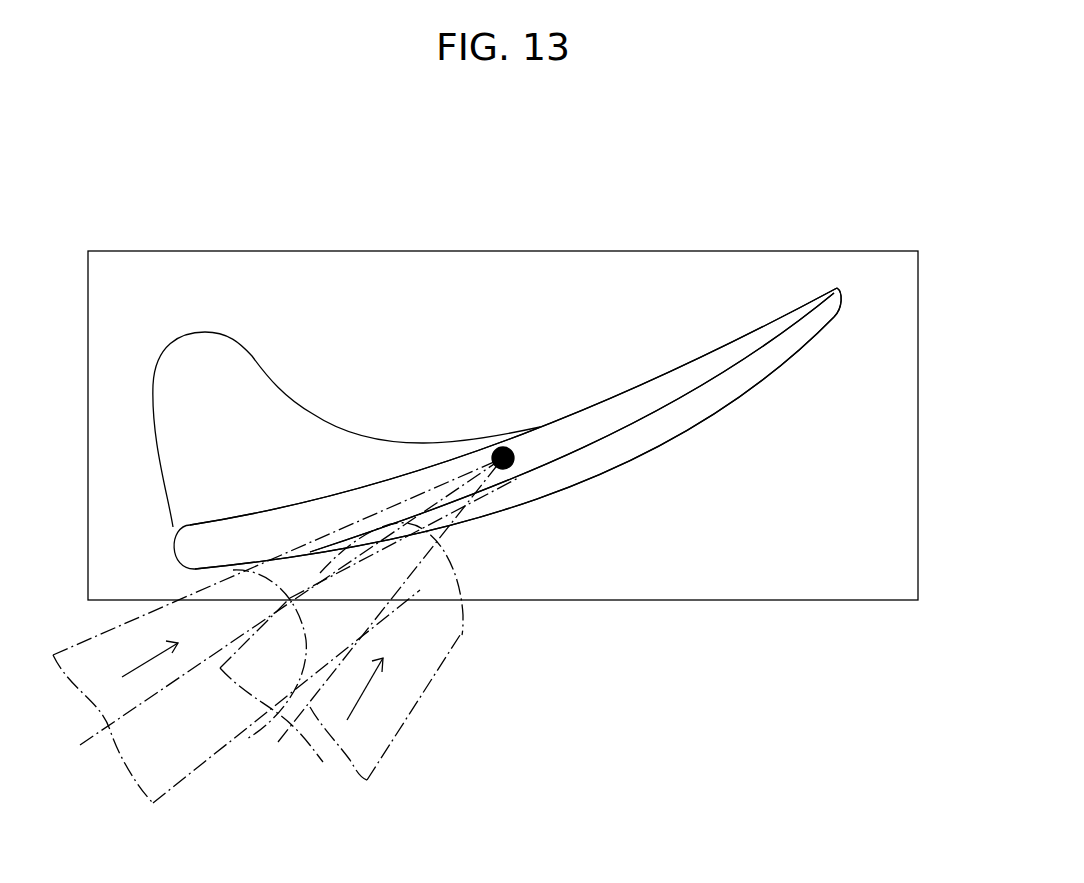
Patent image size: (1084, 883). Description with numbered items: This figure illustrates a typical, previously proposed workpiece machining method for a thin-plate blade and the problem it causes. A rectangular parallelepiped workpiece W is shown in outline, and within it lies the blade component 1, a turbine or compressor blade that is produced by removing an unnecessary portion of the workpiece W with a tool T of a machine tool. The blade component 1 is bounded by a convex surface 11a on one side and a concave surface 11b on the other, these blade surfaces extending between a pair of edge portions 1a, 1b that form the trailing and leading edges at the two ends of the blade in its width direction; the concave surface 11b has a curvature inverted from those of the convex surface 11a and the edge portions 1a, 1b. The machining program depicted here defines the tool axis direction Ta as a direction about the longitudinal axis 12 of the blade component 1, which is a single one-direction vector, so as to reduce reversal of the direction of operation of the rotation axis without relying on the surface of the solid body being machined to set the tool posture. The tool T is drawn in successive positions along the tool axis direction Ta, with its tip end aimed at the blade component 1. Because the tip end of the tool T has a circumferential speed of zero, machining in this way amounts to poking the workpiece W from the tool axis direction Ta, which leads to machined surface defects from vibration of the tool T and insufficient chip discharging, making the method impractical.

The blade component 1 is at (633, 364).
The edge portion 1a is at (175, 558).
The edge portion 1b is at (837, 287).
The convex surface 11a is at (603, 457).
The concave surface 11b is at (552, 417).
The longitudinal axis 12 is at (510, 468).
The workpiece W is at (735, 251).
The tool T is at (323, 762).
The tool axis direction Ta is at (86, 746).